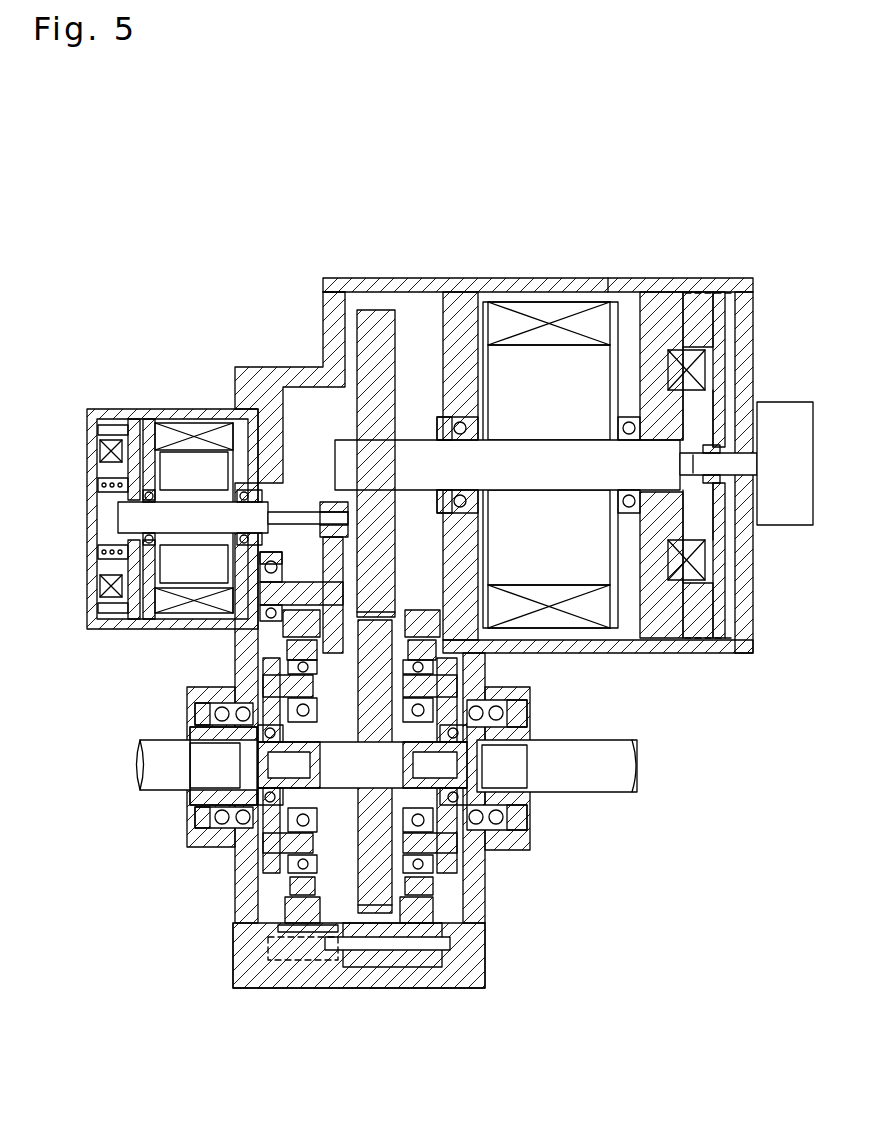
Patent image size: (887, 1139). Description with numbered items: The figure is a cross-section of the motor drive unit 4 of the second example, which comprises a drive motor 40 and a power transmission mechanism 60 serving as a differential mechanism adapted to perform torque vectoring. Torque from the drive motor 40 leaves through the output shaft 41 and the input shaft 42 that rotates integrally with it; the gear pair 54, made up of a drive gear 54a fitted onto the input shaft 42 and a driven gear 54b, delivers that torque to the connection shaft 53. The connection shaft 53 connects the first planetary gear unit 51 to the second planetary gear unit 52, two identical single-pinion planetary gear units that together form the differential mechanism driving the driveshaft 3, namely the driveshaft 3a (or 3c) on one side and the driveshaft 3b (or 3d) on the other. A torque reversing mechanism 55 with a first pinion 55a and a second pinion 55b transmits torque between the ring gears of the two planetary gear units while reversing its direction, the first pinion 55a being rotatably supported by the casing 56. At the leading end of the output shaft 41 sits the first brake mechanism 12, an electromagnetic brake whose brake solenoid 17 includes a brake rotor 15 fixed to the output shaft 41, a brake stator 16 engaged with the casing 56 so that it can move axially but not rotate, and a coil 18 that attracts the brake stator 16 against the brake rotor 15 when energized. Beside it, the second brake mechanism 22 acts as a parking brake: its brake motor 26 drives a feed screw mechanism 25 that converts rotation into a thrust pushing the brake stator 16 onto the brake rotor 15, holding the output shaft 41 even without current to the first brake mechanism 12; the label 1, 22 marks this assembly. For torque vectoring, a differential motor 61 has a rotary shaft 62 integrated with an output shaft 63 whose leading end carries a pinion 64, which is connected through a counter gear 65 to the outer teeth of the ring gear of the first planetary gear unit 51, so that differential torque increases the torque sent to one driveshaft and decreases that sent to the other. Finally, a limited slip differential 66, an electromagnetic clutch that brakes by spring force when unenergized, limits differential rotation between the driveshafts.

The motor drive unit 4 is at (653, 146).
The first brake mechanism 12 is at (694, 411).
The brake rotor 15 is at (656, 300).
The brake stator 16 is at (700, 318).
The brake solenoid 17 is at (736, 426).
The coil 18 is at (698, 365).
The robot joint 1 is at (752, 421).
The second brake mechanism 22 is at (752, 436).
The feed screw mechanism 25 is at (745, 440).
The brake motor 26 is at (795, 410).
The drive motor 40 is at (560, 359).
The output shaft 41 is at (507, 368).
The input shaft 42 is at (410, 455).
The first planetary gear unit 51 is at (266, 656).
The second planetary gear unit 52 is at (448, 909).
The connection shaft 53 is at (340, 772).
The gear pair 54 is at (470, 600).
The drive gear 54a is at (505, 640).
The driven gear 54b is at (482, 693).
The torque reversing mechanism 55 is at (359, 994).
The first pinion 55a is at (303, 982).
The second pinion 55b is at (395, 962).
The casing 56 is at (465, 985).
The power transmission mechanism 60 is at (655, 910).
The differential motor 61 is at (189, 442).
The rotary shaft 62 is at (215, 508).
The output shaft 63 is at (307, 512).
The pinion 64 is at (326, 500).
The counter gear 65 is at (300, 548).
The limited slip differential 66 is at (109, 394).
The driveshaft 3 is at (373, 767).
The driveshaft 3a is at (159, 763).
The driveshaft 3b is at (575, 767).
The driveshaft 3c is at (150, 753).
The driveshaft 3d is at (580, 775).